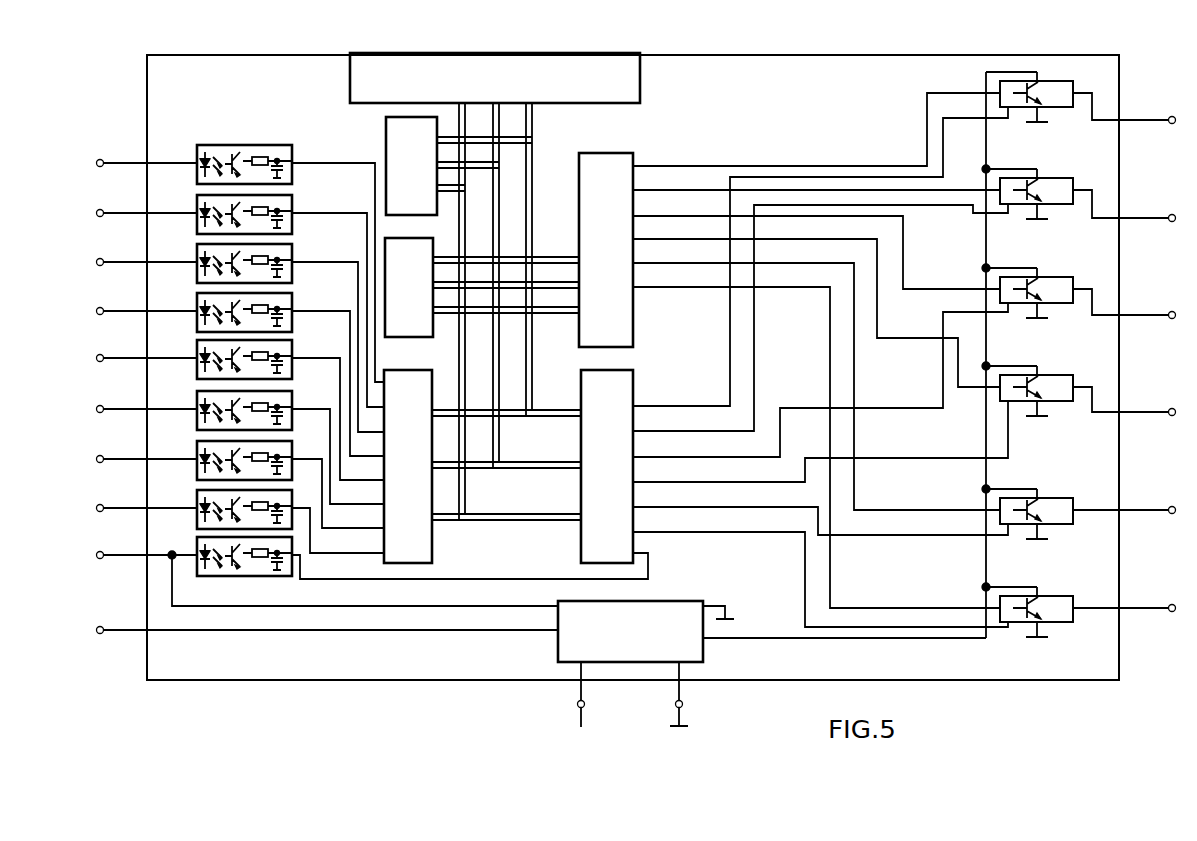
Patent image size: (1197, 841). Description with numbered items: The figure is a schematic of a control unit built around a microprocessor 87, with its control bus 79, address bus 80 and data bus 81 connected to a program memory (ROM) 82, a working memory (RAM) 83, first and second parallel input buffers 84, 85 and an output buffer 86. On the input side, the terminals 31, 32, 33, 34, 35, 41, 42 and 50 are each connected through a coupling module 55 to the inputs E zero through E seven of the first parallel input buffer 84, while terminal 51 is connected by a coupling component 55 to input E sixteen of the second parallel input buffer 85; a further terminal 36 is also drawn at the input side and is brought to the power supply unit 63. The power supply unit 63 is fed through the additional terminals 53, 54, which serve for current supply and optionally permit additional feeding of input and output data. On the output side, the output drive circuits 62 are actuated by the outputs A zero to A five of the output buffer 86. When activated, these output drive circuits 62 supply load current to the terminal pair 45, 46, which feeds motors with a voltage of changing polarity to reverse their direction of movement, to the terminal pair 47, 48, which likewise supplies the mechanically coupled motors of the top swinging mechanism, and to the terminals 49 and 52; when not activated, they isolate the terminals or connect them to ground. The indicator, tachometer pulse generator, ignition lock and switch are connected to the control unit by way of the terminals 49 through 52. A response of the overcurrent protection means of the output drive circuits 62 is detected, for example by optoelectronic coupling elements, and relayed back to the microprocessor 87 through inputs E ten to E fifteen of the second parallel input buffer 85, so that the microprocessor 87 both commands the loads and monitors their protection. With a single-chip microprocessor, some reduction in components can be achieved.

The terminal 31 is at (134, 163).
The terminal 32 is at (134, 213).
The terminal 33 is at (134, 262).
The terminal 34 is at (134, 311).
The terminal 35 is at (134, 358).
The input terminal 36 is at (314, 630).
The terminal 41 is at (134, 409).
The terminal 42 is at (134, 459).
The terminal 45 is at (1135, 113).
The terminal 46 is at (1135, 211).
The terminal 47 is at (1135, 309).
The terminal 48 is at (1135, 406).
The terminal 49 is at (1135, 510).
The terminal 50 is at (133, 508).
The terminal 51 is at (313, 573).
The terminal 52 is at (1135, 609).
The terminal 53 is at (581, 712).
The terminal 54 is at (689, 694).
The coupling module 55 is at (279, 140).
The output drive circuit 62 is at (1057, 79).
The power supply unit 63 is at (703, 647).
The control bus 79 is at (463, 360).
The address bus 80 is at (497, 360).
The data bus 81 is at (532, 360).
The program memory (ROM) 82 is at (410, 215).
The working memory (RAM) 83 is at (408, 337).
The first parallel input buffer 84 is at (437, 374).
The second parallel input buffer 85 is at (622, 370).
The output buffer 86 is at (600, 153).
The microprocessor 87 is at (640, 70).